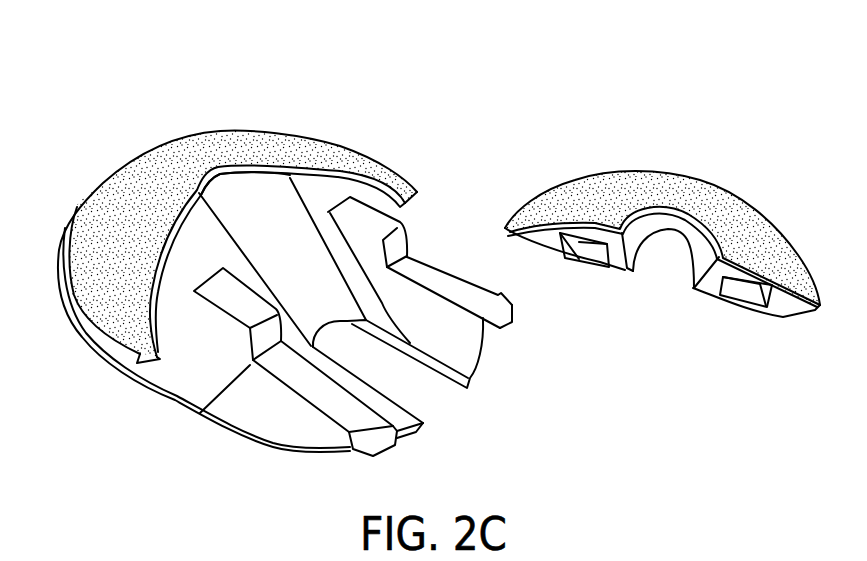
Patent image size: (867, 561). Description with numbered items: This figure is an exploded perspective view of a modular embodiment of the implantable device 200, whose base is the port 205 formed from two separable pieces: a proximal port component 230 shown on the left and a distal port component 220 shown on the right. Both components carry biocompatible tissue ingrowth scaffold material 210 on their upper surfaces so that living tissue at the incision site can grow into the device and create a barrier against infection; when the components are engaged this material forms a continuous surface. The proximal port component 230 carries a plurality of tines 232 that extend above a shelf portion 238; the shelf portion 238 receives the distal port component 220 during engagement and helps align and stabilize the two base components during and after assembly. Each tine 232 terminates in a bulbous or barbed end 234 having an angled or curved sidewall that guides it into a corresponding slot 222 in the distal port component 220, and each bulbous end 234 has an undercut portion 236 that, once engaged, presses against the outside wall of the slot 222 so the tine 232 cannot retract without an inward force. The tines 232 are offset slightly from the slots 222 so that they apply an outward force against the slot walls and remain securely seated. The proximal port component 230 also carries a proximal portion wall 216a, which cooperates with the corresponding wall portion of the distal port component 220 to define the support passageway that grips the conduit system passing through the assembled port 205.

The implantable device 200 is at (426, 86).
The proximal port component 230 is at (80, 82).
The distal port component 220 is at (605, 117).
The tissue ingrowth scaffold material 210 is at (133, 177).
The proximal portion wall 216a is at (277, 204).
The port 205 is at (147, 367).
The tines 232 is at (433, 286).
The shelf portion 238 is at (447, 341).
The undercut portion 236 is at (474, 288).
The bulbous end 234 is at (507, 327).
The slots 222 is at (587, 254).